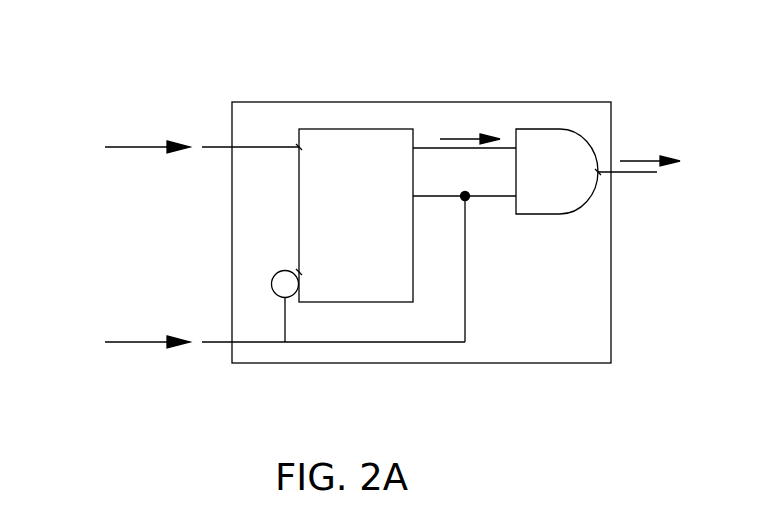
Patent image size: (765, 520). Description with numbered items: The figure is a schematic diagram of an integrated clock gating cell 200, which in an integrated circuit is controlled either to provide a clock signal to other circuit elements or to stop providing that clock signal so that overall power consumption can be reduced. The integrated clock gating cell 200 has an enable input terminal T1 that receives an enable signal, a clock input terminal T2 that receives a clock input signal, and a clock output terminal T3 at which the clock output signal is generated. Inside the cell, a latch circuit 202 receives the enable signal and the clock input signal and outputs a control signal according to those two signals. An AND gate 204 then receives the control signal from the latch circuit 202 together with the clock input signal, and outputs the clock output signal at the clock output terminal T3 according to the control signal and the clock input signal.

The integrated clock gating cell 200 is at (92, 42).
The latch circuit 202 is at (378, 231).
The AND gate 204 is at (575, 185).
The enable input terminal T1 is at (299, 147).
The clock input terminal T2 is at (299, 272).
The clock output terminal T3 is at (598, 170).